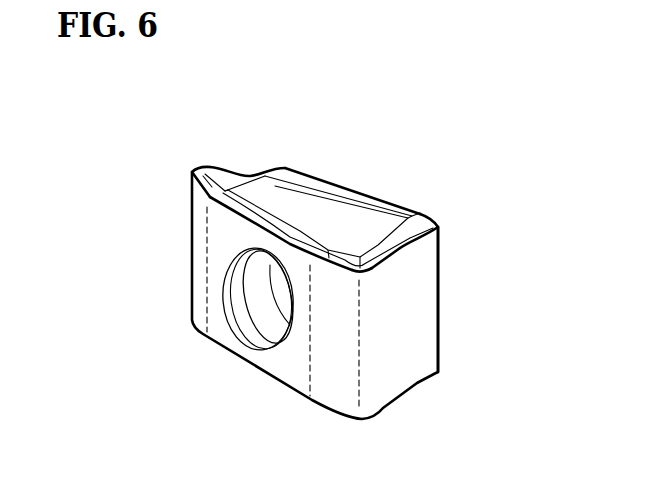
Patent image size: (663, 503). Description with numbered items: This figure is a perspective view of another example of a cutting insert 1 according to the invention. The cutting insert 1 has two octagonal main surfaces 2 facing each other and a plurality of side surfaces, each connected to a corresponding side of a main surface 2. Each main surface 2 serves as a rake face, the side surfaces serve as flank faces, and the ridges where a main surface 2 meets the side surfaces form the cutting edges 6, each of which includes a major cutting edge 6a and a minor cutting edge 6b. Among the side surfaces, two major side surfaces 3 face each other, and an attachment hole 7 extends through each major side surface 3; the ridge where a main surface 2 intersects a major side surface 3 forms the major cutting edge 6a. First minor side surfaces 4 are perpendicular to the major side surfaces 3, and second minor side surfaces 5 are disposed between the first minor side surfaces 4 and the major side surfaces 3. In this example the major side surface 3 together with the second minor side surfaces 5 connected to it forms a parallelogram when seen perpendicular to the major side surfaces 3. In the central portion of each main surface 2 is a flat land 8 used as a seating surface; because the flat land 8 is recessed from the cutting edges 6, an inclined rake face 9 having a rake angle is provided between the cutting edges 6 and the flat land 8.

The cutting insert 1 is at (455, 310).
The main surface 2 is at (292, 212).
The major side surface 3 is at (228, 345).
The first minor side surface 4 is at (400, 353).
The second minor side surface 5 is at (333, 383).
The cutting edge 6 is at (259, 175).
The major cutting edge 6a is at (387, 197).
The minor cutting edge 6b is at (438, 226).
The attachment hole 7 is at (238, 302).
The flat land 8 is at (260, 188).
The inclined rake face 9 is at (343, 188).